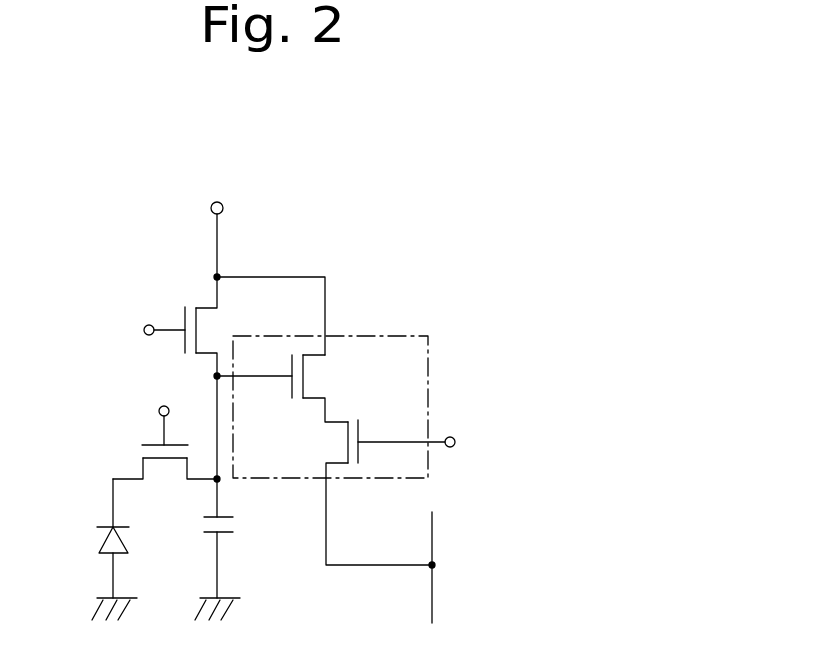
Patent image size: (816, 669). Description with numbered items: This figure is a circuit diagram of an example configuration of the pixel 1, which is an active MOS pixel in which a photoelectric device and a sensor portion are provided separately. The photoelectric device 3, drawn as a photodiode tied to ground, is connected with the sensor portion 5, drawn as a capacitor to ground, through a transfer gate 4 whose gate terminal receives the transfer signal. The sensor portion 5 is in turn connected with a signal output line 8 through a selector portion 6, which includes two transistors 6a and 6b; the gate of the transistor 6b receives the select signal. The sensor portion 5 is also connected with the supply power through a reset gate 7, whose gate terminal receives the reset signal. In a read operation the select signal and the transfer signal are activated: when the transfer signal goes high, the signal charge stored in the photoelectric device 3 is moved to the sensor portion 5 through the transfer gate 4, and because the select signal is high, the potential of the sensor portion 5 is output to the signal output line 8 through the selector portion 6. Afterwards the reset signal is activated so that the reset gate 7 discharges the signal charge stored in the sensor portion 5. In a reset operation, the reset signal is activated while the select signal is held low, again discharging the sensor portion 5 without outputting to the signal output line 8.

The pixel 1 is at (37, 164).
The photoelectric device 3 is at (100, 550).
The transfer gate 4 is at (168, 470).
The sensor portion 5 is at (235, 533).
The selector portion 6 is at (385, 336).
The transistor 6a is at (292, 398).
The transistor 6b is at (358, 422).
The reset gate 7 is at (185, 307).
The signal output line 8 is at (433, 590).